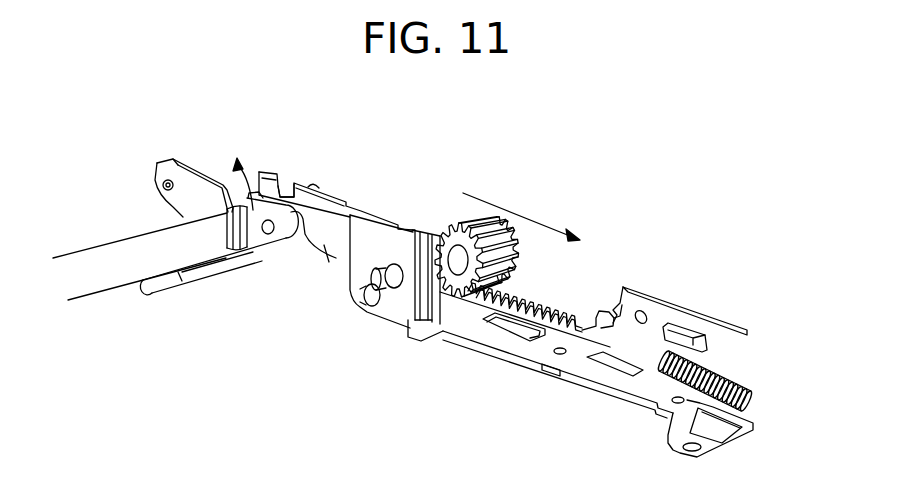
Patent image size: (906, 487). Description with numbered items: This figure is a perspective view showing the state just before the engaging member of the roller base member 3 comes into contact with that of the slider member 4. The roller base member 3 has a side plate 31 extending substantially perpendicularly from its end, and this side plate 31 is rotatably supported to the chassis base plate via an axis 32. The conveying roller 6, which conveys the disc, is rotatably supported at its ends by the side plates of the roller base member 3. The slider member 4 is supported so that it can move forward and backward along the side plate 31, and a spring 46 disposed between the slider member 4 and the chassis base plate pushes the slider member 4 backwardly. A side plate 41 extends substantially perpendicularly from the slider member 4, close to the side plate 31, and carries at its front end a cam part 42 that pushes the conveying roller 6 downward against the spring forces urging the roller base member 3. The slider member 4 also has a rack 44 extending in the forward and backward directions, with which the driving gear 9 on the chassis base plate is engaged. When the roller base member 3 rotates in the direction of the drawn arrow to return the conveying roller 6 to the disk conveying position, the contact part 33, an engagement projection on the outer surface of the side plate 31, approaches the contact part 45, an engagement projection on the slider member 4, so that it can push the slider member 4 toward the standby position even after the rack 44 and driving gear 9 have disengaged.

The roller base member 3 is at (208, 280).
The slider member 4 is at (580, 367).
The conveying roller 6 is at (107, 280).
The driving gear 9 is at (443, 225).
The side plate 31 is at (203, 202).
The axis 32 is at (163, 184).
The contact part 33 is at (300, 228).
The side plate 41 is at (340, 208).
The cam part 42 is at (322, 248).
The rack 44 is at (528, 298).
The contact part 45 is at (286, 183).
The spring 46 is at (727, 380).